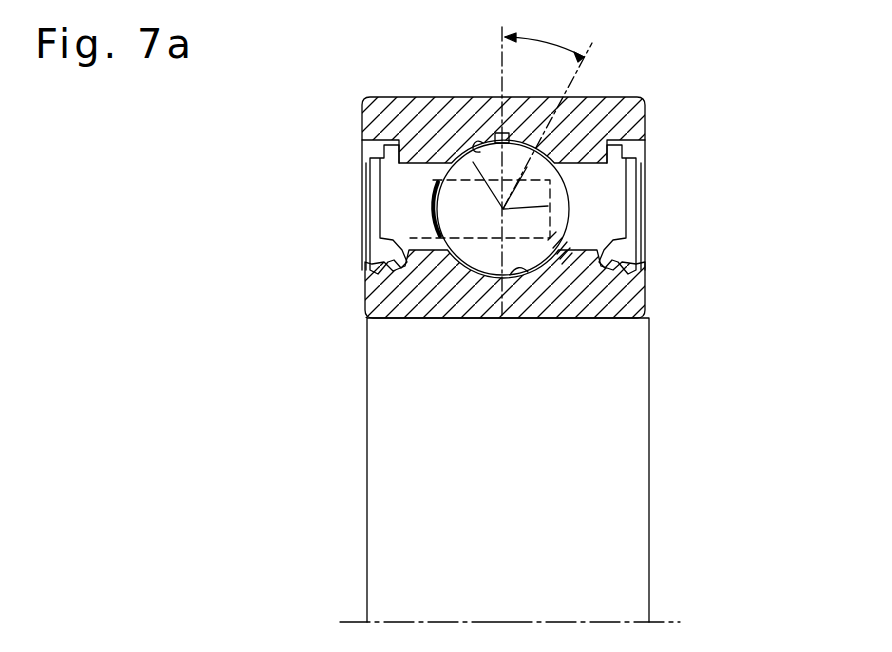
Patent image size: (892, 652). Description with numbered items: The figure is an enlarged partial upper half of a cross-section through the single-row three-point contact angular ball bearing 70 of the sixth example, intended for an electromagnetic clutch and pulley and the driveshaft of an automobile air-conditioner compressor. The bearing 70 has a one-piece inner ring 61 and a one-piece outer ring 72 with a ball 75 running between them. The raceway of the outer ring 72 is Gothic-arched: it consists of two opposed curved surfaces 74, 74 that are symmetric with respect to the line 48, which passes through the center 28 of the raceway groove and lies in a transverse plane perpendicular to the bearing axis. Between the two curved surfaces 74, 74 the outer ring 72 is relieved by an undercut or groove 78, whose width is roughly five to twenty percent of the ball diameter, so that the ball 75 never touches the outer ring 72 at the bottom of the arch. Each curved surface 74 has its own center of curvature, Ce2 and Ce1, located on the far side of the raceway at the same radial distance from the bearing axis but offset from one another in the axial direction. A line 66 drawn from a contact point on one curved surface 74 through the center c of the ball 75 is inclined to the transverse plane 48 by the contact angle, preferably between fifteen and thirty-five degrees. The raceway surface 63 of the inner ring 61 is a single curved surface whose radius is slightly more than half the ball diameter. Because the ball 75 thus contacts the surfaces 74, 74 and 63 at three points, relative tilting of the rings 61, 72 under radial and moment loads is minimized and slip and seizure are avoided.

The single-row three-point contact angular ball bearing 70 is at (668, 62).
The outer ring 72 is at (622, 118).
The inner ring 61 is at (610, 297).
The raceway surface of the inner ring 63 is at (530, 272).
The Gothic arched curved surfaces 74 is at (470, 152).
The ball 75 is at (437, 200).
The undercut or groove 78 is at (488, 133).
The center of the raceway groove 28 is at (512, 108).
The transverse plane 48 is at (500, 58).
The contact line 66 is at (592, 49).
The center of the ball c is at (522, 214).
The center of curvature of curved surface Ce1 is at (598, 240).
The center of curvature of curved surface Ce2 is at (522, 214).